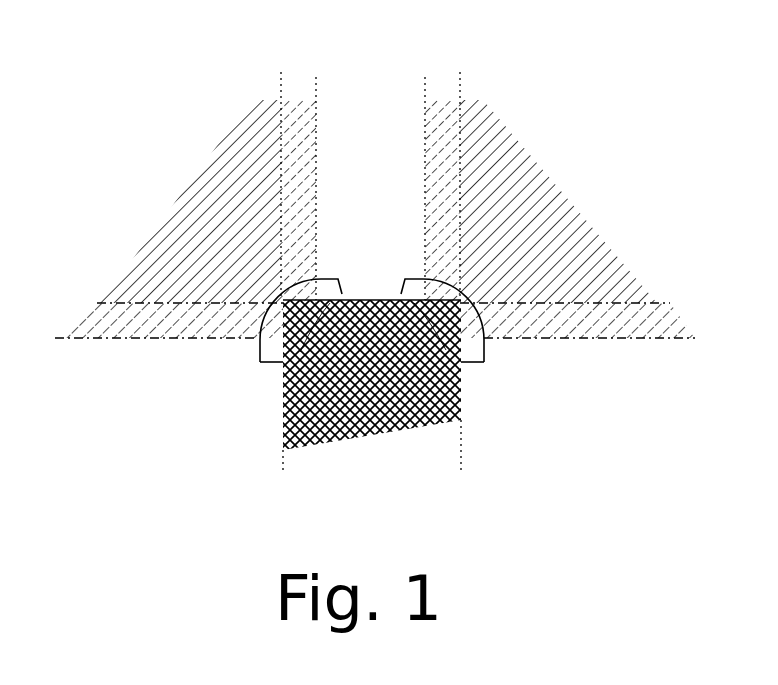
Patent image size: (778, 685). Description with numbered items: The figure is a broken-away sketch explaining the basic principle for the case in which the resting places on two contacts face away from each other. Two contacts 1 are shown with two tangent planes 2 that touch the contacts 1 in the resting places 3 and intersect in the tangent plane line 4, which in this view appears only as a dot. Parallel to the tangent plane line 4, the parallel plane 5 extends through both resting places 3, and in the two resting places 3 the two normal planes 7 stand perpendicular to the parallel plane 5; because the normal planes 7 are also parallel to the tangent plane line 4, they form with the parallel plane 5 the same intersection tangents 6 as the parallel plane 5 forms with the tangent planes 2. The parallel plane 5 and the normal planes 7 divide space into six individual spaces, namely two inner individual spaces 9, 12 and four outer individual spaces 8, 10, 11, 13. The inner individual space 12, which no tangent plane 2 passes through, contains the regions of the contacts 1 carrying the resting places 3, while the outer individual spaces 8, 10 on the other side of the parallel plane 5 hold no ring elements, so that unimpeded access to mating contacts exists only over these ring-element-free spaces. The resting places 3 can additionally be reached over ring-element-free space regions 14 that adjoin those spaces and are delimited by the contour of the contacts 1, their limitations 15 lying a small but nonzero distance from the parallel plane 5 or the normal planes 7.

The contacts 1 is at (372, 298).
The tangent planes 2 is at (232, 81).
The resting places 3 is at (280, 302).
The tangent plane line 4 is at (372, 213).
The parallel plane 5 is at (637, 295).
The intersection tangents 6 is at (283, 300).
The normal planes 7 is at (283, 474).
The outer individual space 8 is at (190, 200).
The inner individual space 9 is at (370, 67).
The outer individual space 10 is at (560, 198).
The outer individual space 11 is at (170, 405).
The inner individual space 12 is at (372, 400).
The outer individual space 13 is at (575, 405).
The ring-element-free space regions 14 is at (607, 368).
The limitations 15 is at (316, 77).